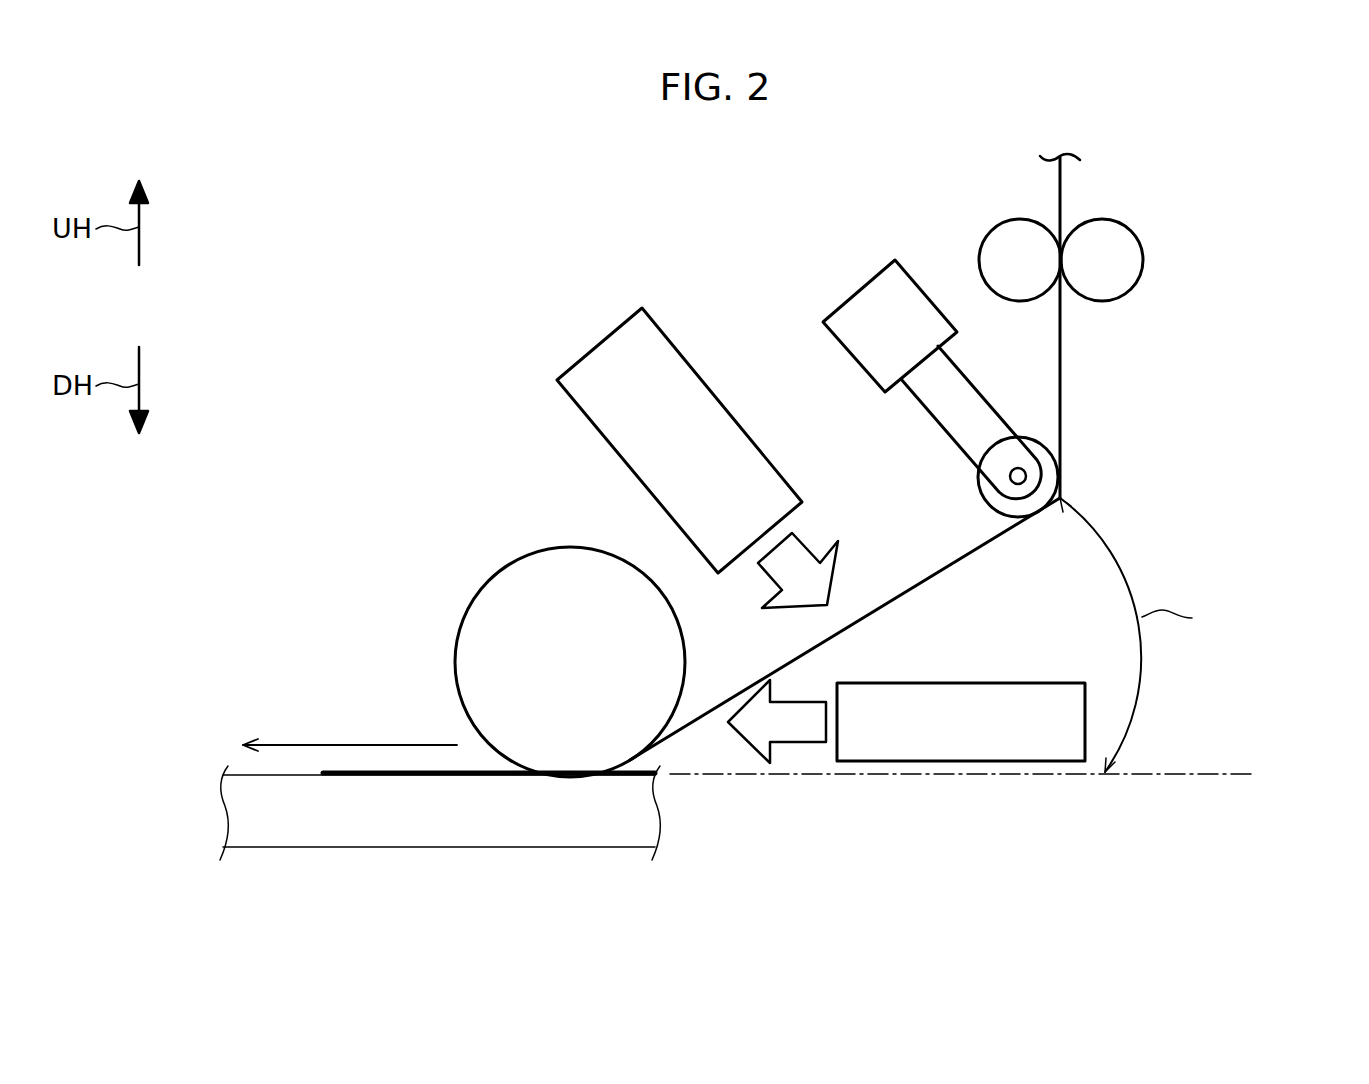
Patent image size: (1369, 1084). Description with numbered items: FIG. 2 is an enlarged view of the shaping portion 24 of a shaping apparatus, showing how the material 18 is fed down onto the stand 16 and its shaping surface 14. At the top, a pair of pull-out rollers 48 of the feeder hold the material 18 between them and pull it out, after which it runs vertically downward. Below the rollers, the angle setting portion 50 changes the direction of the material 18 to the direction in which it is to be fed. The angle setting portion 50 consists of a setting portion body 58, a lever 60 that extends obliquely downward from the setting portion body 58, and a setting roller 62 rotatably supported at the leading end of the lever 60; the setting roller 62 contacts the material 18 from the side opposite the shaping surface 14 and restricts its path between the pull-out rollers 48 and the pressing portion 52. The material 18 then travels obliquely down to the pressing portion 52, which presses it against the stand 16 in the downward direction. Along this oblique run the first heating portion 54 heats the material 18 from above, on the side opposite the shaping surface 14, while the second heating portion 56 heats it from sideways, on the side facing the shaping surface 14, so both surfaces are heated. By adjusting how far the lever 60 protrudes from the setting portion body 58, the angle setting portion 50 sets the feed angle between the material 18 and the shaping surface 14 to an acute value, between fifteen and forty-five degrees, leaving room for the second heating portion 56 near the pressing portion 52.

The shaping surface 14 is at (237, 775).
The stand 16 is at (603, 850).
The material 18 is at (1062, 185).
The shaping portion 24 is at (1260, 275).
The pull-out rollers 48 is at (1022, 240).
The angle setting portion 50 is at (917, 367).
The pressing portion 52 is at (492, 573).
The first heating portion 54 is at (590, 338).
The second heating portion 56 is at (1001, 756).
The setting portion body 58 is at (857, 345).
The lever 60 is at (942, 410).
The setting roller 62 is at (993, 490).